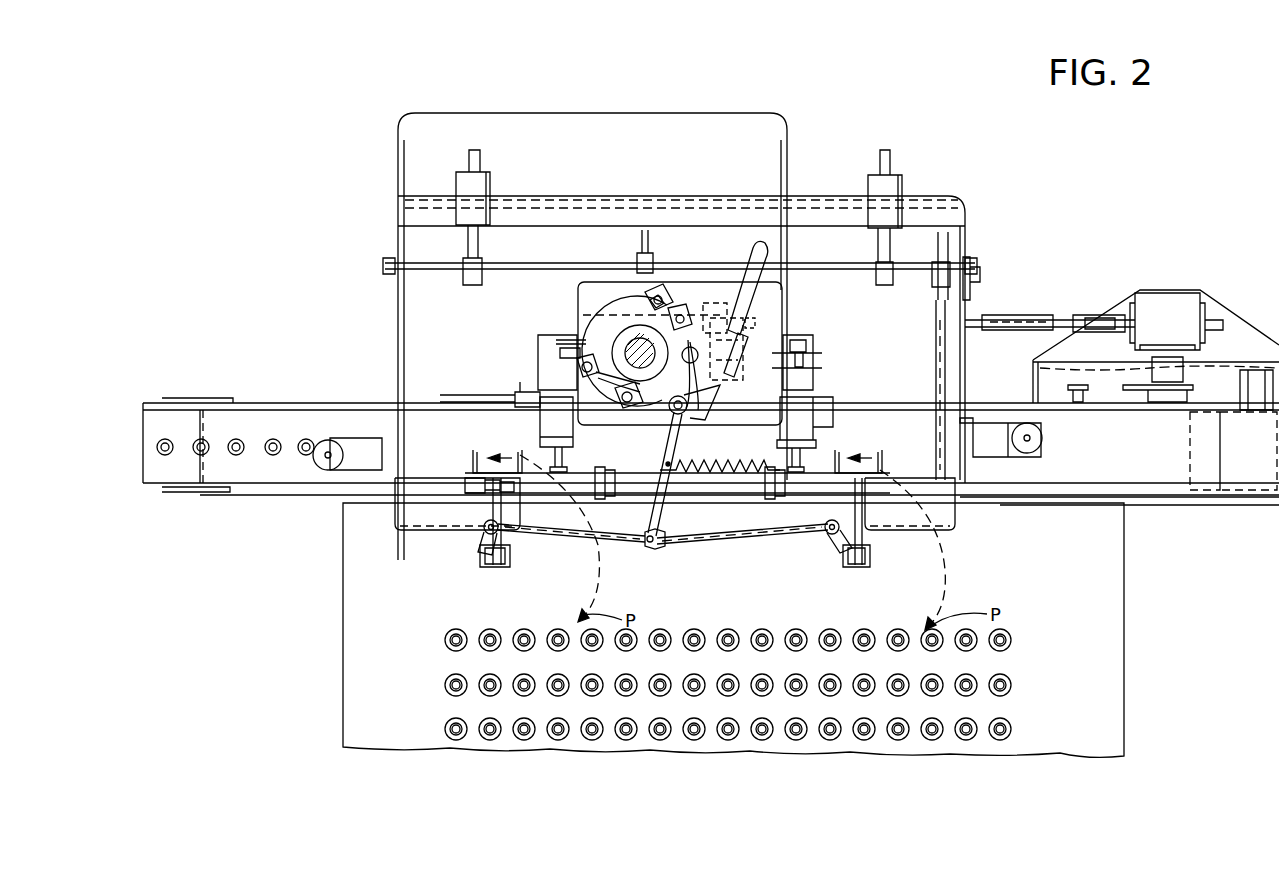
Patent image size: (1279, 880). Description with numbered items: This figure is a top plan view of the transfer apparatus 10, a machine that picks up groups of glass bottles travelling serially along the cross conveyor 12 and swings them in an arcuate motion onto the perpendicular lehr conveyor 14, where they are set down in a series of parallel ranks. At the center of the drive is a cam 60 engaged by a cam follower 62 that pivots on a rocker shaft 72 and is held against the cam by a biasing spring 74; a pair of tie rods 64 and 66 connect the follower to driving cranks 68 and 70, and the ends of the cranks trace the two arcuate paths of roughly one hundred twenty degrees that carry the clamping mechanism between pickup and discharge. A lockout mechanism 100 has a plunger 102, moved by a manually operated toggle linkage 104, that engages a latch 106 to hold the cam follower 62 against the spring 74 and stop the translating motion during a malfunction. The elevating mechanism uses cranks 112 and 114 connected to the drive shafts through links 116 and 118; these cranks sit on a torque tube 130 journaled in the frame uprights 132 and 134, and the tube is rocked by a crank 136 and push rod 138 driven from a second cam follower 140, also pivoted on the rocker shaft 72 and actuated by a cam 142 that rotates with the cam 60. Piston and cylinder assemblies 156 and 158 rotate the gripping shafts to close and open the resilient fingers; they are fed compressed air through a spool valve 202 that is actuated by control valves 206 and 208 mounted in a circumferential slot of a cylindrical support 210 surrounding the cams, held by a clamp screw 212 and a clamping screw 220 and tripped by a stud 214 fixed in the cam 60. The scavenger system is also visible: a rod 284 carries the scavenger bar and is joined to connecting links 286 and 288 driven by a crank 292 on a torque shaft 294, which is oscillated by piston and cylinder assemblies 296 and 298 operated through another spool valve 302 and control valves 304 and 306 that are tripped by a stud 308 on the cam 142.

The transfer apparatus 10 is at (1148, 242).
The cross conveyor 12 is at (220, 460).
The lehr conveyor 14 is at (356, 634).
The cam 60 is at (618, 312).
The cam follower 62 is at (672, 447).
The tie rod 64 is at (612, 538).
The tie rod 66 is at (730, 535).
The driving crank 68 is at (480, 546).
The driving crank 70 is at (840, 552).
The rocker shaft 72 is at (670, 462).
The biasing spring 74 is at (722, 470).
The lockout mechanism 100 is at (746, 340).
The plunger 102 is at (795, 360).
The toggle linkage 104 is at (760, 262).
The latch 106 is at (695, 412).
The crank 112 is at (470, 510).
The crank 114 is at (858, 520).
The link 116 is at (492, 566).
The link 118 is at (858, 562).
The torque tube 130 is at (680, 490).
The upright 132 is at (560, 470).
The upright 134 is at (870, 455).
The crank 136 is at (598, 495).
The push rod 138 is at (585, 470).
The cam follower 140 is at (628, 404).
The cam 142 is at (616, 340).
The piston and cylinder assembly 156 is at (325, 448).
The piston and cylinder assembly 158 is at (1040, 438).
The spool valve 202 is at (556, 396).
The control valve 206 is at (680, 292).
The control valve 208 is at (556, 342).
The cylindrical support 210 is at (620, 330).
The clamp screw 212 is at (730, 306).
The stud 214 is at (566, 346).
The clamping screw 220 is at (596, 374).
The rod 284 is at (940, 340).
The connecting link 286 is at (645, 258).
The connecting link 288 is at (945, 240).
The crank 292 is at (950, 278).
The torque shaft 294 is at (430, 266).
The piston and cylinder assembly 296 is at (482, 188).
The piston and cylinder assembly 298 is at (880, 190).
The spool valve 302 is at (800, 420).
The control valve 304 is at (650, 300).
The control valve 306 is at (546, 400).
The stud 308 is at (576, 368).